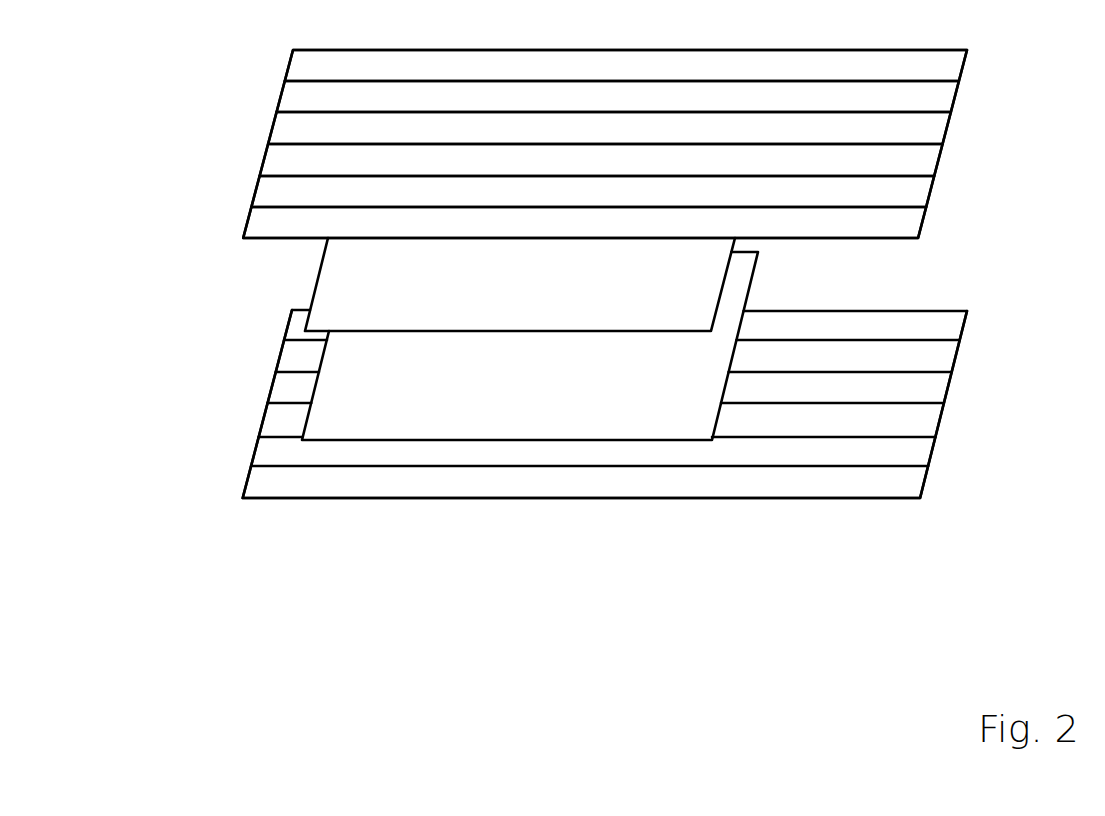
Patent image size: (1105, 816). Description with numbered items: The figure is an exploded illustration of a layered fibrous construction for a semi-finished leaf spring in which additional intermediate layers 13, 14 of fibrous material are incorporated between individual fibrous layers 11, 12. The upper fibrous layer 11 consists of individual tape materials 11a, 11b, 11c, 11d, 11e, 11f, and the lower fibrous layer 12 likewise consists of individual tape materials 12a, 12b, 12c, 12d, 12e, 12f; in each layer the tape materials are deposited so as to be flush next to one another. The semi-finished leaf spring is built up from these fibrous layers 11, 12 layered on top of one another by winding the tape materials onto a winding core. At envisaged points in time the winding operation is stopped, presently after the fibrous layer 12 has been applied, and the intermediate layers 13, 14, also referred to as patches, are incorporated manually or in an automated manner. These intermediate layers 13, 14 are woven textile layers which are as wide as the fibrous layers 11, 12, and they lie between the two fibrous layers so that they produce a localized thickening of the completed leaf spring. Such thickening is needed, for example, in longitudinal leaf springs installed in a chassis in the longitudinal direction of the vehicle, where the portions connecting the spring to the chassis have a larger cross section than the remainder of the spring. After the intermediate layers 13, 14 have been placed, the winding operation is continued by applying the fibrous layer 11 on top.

The fibrous layer 11 is at (995, 51).
The tape material 11a is at (302, 54).
The tape material 11b is at (303, 96).
The tape material 11c is at (296, 127).
The tape material 11d is at (285, 158).
The tape material 11e is at (275, 193).
The tape material 11f is at (267, 221).
The fibrous layer 12 is at (993, 312).
The tape material 12a is at (302, 325).
The tape material 12b is at (300, 362).
The tape material 12c is at (292, 393).
The tape material 12d is at (282, 425).
The tape material 12e is at (272, 459).
The tape material 12f is at (262, 487).
The intermediate layer 13 is at (607, 417).
The intermediate layer 14 is at (434, 316).